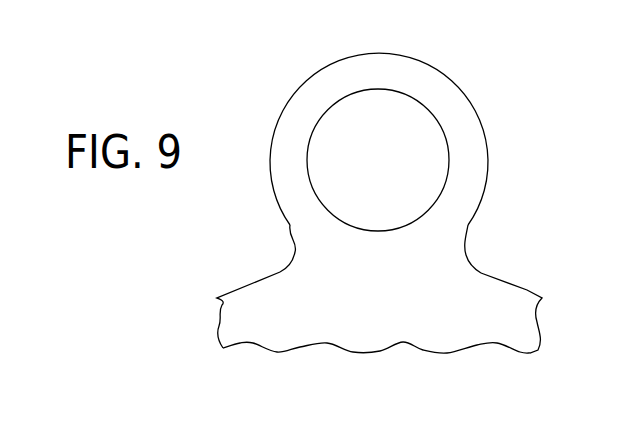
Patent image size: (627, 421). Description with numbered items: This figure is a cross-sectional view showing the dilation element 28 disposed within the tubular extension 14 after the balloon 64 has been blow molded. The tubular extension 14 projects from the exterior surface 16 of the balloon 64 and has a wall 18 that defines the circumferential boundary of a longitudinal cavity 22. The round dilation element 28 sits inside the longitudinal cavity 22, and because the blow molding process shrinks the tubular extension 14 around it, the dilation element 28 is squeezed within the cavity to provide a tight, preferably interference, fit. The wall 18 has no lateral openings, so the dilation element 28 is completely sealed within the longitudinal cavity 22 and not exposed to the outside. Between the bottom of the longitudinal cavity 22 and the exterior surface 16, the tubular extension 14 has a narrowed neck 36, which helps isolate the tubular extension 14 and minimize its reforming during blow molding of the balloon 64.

The balloon 64 is at (222, 252).
The tubular extension 14 is at (288, 102).
The wall 18 is at (408, 72).
The longitudinal cavity 22 is at (428, 108).
The dilation element 28 is at (407, 162).
The narrowed neck 36 is at (465, 252).
The exterior surface 16 is at (527, 290).